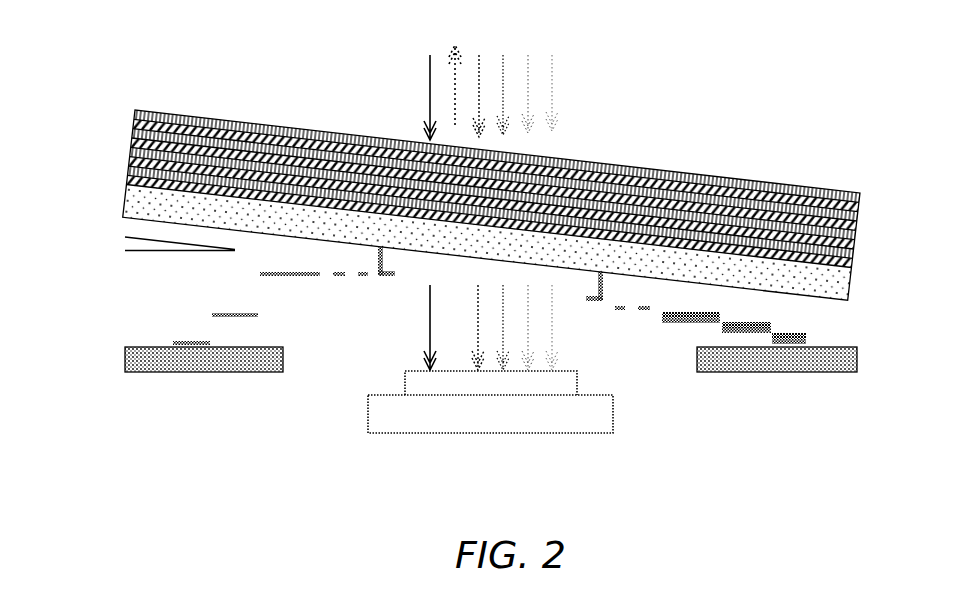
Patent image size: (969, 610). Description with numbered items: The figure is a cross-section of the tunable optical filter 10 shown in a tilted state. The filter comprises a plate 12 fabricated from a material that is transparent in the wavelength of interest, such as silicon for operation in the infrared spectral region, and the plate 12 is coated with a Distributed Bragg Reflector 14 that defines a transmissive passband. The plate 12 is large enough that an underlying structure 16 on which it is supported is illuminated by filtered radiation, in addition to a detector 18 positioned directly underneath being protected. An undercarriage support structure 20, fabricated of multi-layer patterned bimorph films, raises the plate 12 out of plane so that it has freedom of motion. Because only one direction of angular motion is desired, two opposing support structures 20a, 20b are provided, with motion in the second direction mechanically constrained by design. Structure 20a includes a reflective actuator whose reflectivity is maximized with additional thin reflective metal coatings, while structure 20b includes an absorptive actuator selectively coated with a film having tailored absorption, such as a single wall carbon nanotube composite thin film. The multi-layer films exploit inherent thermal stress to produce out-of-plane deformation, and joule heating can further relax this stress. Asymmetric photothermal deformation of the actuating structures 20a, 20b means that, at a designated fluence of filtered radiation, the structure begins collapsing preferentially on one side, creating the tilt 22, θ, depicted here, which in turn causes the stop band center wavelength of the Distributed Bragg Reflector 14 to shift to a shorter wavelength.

The tunable optical filter 10 is at (205, 78).
The plate 12 is at (122, 200).
The Distributed Bragg Reflector 14 is at (862, 194).
The underlying structure 16 is at (125, 357).
The detector 18 is at (613, 412).
The undercarriage support structure 20 is at (196, 258).
The support structure 20a is at (303, 312).
The support structure 20b is at (693, 335).
The tilt 22 is at (90, 244).